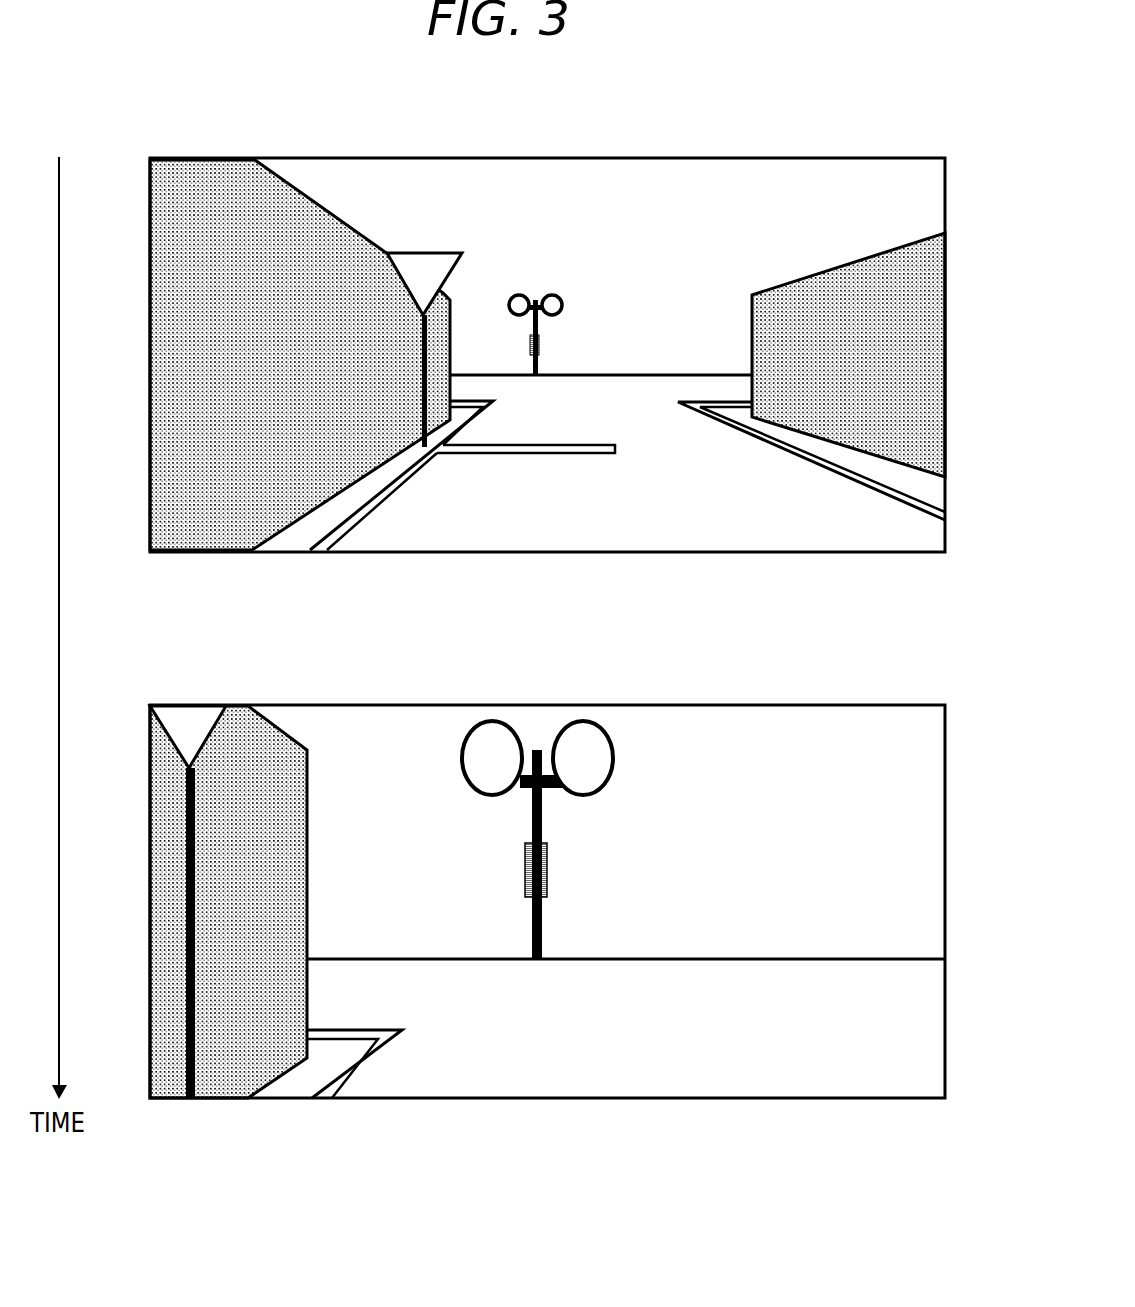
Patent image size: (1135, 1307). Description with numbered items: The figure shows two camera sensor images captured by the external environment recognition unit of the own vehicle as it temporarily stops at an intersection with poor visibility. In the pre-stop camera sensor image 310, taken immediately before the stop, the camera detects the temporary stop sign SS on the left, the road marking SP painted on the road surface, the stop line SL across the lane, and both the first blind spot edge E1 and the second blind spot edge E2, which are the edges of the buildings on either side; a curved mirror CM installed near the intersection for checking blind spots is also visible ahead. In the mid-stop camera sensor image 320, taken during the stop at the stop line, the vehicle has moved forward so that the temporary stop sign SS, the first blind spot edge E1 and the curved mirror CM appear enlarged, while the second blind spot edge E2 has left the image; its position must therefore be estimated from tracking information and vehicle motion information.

The pre-stop camera sensor image 310 is at (803, 157).
The mid-stop camera sensor image 320 is at (803, 705).
The temporary stop sign SS is at (435, 251).
The first blind spot edge E1 is at (450, 307).
The second blind spot edge E2 is at (748, 360).
The curved mirror CM is at (560, 297).
The stop line SL is at (590, 458).
The road marking SP is at (520, 543).